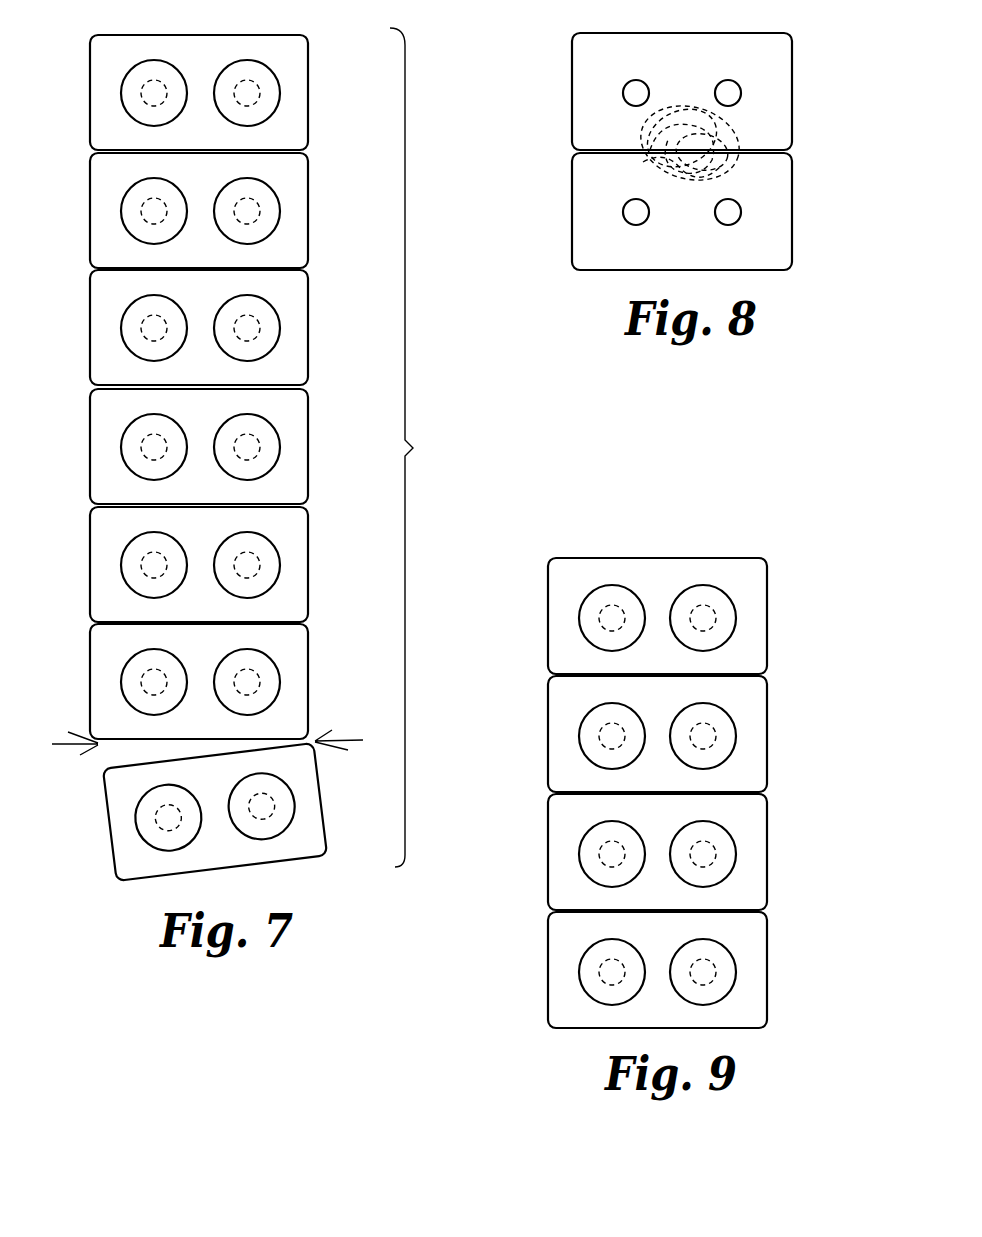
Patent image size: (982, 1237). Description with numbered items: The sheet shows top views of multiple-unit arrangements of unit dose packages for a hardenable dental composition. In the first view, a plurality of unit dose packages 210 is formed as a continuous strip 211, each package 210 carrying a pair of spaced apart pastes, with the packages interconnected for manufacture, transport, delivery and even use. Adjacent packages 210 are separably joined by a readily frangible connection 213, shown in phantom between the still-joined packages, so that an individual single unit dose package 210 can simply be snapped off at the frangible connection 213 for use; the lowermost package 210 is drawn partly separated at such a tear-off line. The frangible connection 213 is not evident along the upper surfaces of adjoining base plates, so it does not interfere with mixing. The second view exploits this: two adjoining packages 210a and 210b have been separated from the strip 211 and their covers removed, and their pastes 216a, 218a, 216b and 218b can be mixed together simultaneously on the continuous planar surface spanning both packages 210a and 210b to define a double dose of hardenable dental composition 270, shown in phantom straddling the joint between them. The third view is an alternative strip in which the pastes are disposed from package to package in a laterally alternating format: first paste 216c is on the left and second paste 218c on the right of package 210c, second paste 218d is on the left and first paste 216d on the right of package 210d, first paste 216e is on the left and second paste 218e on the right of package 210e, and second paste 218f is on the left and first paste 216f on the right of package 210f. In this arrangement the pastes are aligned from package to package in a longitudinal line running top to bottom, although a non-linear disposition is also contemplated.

In FIG. 7, the unit dose package 210 is at (298, 98).
In FIG. 7, the continuous strip 211 is at (426, 447).
In FIG. 7, the frangible connection 213 is at (112, 764).
In FIG. 8, the adjoining package 210a is at (782, 90).
In FIG. 8, the adjoining package 210b is at (782, 193).
In FIG. 9, the package 210c is at (757, 622).
In FIG. 9, the package 210d is at (757, 740).
In FIG. 9, the package 210e is at (757, 858).
In FIG. 9, the package 210f is at (757, 976).
In FIG. 8, the paste 216a is at (628, 82).
In FIG. 8, the paste 218a is at (733, 82).
In FIG. 8, the paste 216b is at (630, 221).
In FIG. 8, the paste 218b is at (735, 221).
In FIG. 9, the first paste 216c is at (614, 604).
In FIG. 9, the second paste 218c is at (697, 632).
In FIG. 9, the first paste 216d is at (614, 722).
In FIG. 9, the second paste 218d is at (697, 750).
In FIG. 9, the first paste 216e is at (614, 840).
In FIG. 9, the second paste 218e is at (697, 868).
In FIG. 9, the first paste 216f is at (614, 958).
In FIG. 9, the second paste 218f is at (697, 986).
In FIG. 8, the hardenable dental composition 270 is at (643, 162).